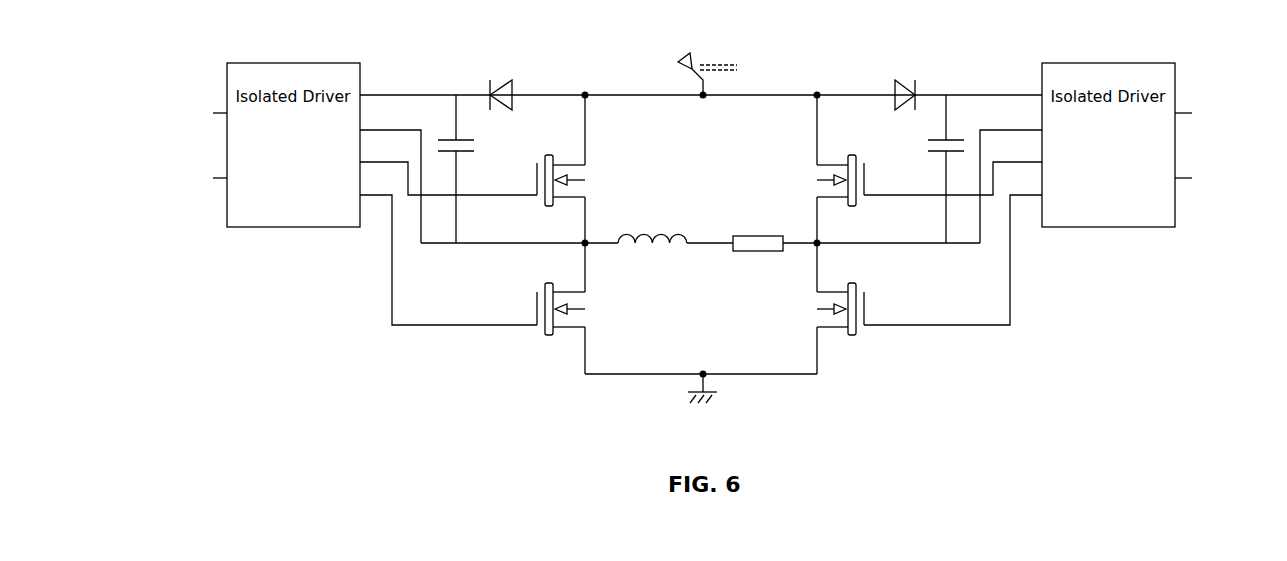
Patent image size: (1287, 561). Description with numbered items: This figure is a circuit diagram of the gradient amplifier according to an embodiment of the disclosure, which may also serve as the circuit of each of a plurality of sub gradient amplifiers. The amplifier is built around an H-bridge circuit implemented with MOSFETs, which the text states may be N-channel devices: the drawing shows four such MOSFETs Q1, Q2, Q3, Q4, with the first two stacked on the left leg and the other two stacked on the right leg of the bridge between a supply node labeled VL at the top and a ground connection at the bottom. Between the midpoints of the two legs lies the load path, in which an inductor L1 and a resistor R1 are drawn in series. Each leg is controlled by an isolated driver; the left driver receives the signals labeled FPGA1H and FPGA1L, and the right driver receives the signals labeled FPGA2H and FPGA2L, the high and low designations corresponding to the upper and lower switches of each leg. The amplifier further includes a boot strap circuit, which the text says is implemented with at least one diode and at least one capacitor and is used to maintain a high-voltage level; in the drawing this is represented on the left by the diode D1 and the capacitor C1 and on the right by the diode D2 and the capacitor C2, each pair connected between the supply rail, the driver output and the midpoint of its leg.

The FPGA high-side signal input 1 FPGA1H is at (187, 113).
The FPGA low-side signal input 1 FPGA1L is at (188, 178).
The FPGA high-side signal input 2 FPGA2H is at (1216, 113).
The FPGA low-side signal input 2 FPGA2L is at (1214, 178).
The supply voltage node VL is at (696, 74).
The diode 1 D1 is at (501, 86).
The diode 2 D2 is at (904, 86).
The capacitor 1 C1 is at (466, 169).
The capacitor 2 C2 is at (934, 169).
The MOSFET switch 1 Q1 is at (574, 180).
The MOSFET switch 2 Q2 is at (574, 309).
The MOSFET switch 3 Q3 is at (827, 180).
The MOSFET switch 4 Q4 is at (827, 309).
The inductor L1 is at (652, 225).
The resistor R1 is at (758, 233).